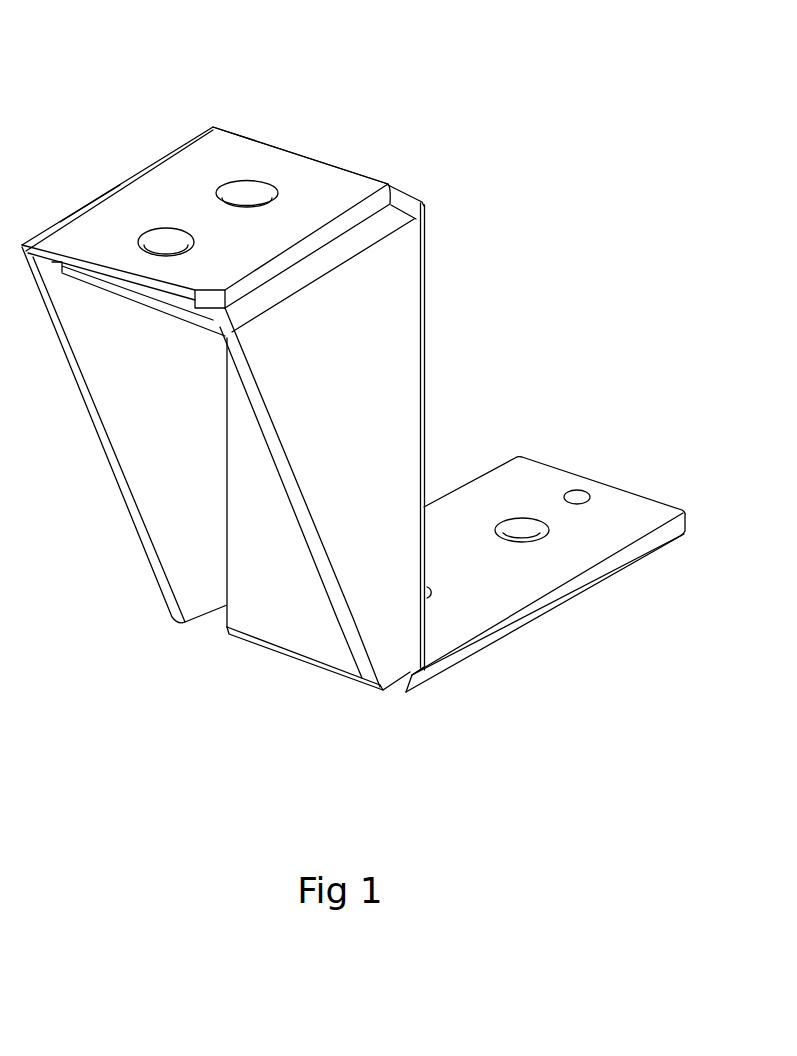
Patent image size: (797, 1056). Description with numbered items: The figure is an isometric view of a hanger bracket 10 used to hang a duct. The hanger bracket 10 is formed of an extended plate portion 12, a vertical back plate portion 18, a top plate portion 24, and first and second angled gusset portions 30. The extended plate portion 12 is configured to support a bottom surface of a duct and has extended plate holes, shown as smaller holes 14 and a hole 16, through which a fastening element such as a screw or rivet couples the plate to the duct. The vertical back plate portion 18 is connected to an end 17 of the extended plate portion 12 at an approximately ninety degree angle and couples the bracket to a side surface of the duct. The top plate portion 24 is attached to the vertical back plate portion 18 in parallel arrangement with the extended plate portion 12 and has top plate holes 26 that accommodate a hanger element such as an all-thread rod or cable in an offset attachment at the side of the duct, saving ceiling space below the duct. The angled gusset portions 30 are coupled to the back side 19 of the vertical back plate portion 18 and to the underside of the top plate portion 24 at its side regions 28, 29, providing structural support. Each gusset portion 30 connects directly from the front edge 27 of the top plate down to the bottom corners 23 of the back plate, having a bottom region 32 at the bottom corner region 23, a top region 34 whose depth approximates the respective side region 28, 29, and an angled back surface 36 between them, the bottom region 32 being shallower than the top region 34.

The hanger bracket 10 is at (300, 103).
The extended plate portion 12 is at (600, 583).
The smaller holes 14 is at (430, 593).
The extended plate hole 16 is at (525, 535).
The end of the extended plate portion 17 is at (482, 622).
The vertical back plate portion 18 is at (313, 672).
The back side of vertical back plate portion 19 is at (260, 607).
The bottom corner region 23 is at (410, 697).
The top plate portion 24 is at (233, 129).
The top plate holes 26 is at (243, 193).
The front edge of the top plate 27 is at (76, 279).
The side region of top plate portion 28 is at (347, 165).
The side region of top plate portion 29 is at (220, 153).
The angled gusset portion 30 is at (118, 478).
The bottom region of gusset portion 32 is at (348, 677).
The top region of gusset portion 34 is at (425, 203).
The angled back surface 36 is at (298, 503).